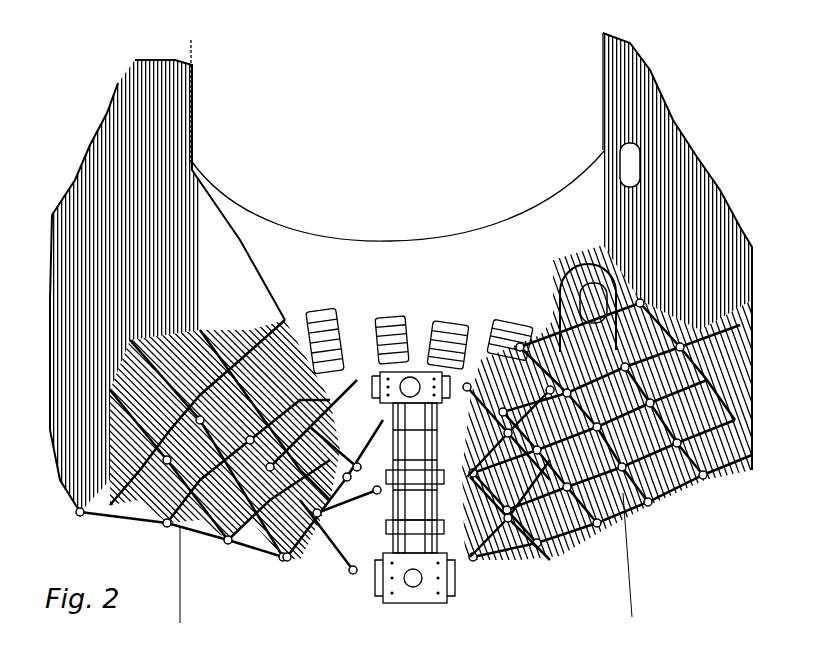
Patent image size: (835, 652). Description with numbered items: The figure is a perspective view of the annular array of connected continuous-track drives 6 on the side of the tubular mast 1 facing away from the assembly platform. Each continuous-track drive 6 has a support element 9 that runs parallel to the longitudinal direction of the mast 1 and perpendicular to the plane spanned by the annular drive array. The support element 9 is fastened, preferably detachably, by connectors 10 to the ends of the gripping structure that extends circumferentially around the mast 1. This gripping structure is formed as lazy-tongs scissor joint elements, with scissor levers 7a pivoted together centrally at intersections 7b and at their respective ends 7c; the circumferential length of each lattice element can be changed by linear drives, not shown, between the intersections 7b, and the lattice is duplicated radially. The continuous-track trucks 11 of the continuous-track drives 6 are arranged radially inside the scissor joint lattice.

The tubular mast 1 is at (452, 118).
The continuous-track drive 6 is at (593, 188).
The scissor lever 7a is at (697, 478).
The intersection 7b is at (562, 522).
The end 7c is at (272, 566).
The support element 9 is at (436, 600).
The connector 10 is at (405, 373).
The continuous-track truck 11 is at (518, 272).